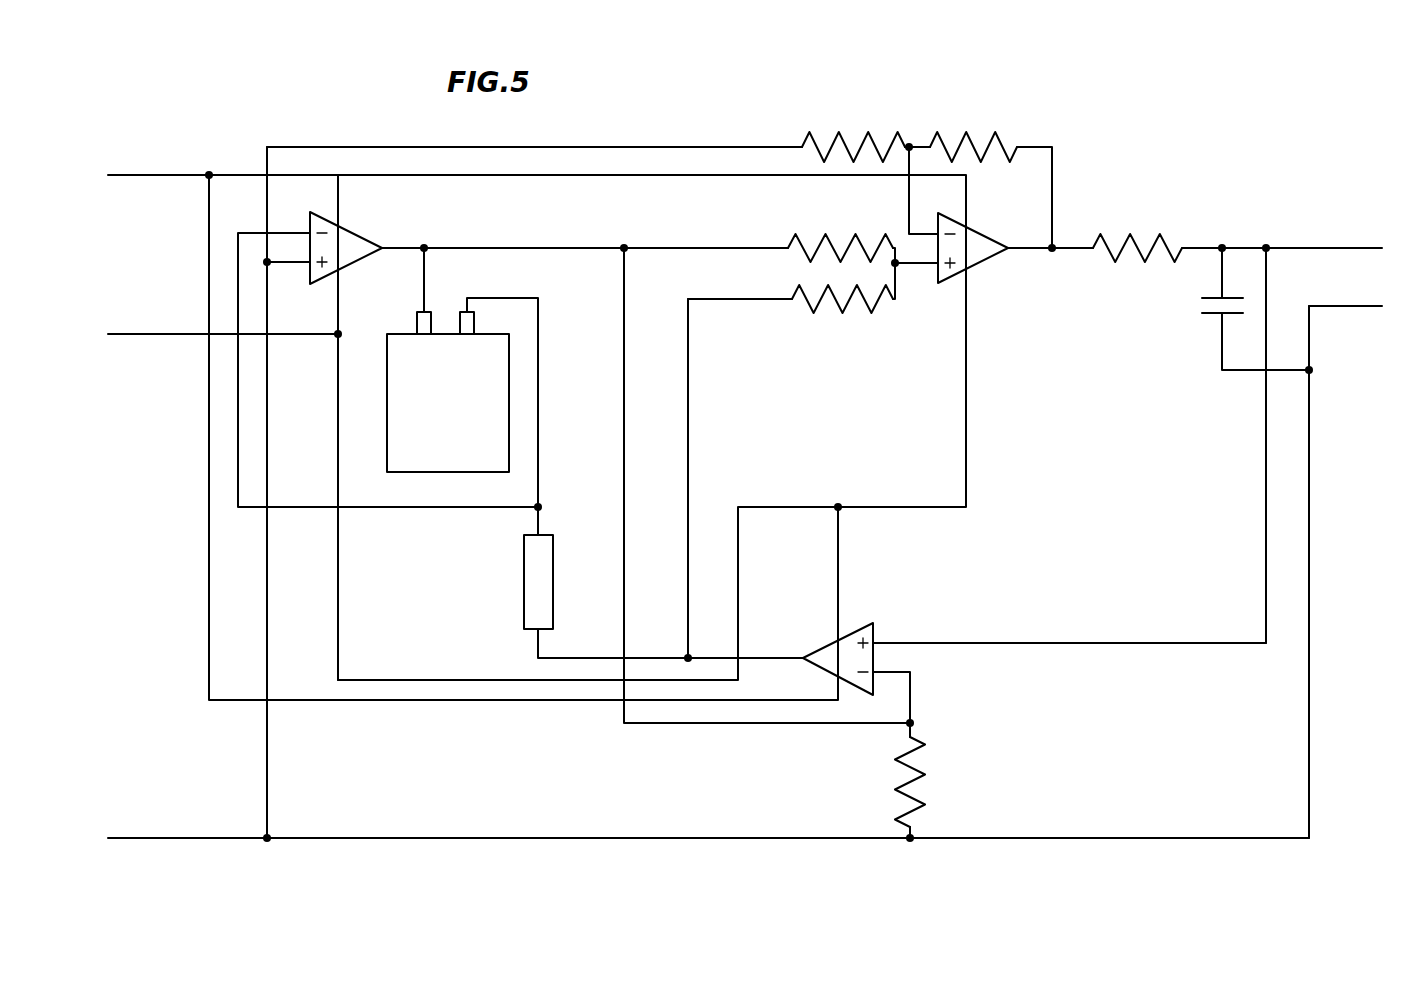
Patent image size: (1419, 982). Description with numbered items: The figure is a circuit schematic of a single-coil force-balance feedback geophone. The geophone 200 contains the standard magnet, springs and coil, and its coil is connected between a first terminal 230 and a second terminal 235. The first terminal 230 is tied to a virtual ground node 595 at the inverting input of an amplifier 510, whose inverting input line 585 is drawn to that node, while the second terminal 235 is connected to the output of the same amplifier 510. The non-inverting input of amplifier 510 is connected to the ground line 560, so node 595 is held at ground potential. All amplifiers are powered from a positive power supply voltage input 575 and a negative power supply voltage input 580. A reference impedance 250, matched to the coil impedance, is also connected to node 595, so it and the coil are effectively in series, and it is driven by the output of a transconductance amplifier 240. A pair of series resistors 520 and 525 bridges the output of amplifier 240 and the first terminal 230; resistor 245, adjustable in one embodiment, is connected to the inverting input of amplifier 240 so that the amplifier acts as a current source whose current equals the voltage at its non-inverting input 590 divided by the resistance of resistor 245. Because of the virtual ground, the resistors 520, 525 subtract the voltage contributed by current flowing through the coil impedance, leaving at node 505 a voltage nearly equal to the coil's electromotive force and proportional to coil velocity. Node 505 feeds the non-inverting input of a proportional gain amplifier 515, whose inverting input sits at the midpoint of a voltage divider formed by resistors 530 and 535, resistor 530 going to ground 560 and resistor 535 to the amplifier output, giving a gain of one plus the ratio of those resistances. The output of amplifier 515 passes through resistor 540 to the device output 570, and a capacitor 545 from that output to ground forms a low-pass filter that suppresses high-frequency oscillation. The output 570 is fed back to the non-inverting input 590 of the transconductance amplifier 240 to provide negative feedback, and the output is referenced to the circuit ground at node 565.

The negative power supply voltage input 580 is at (166, 175).
The positive power supply voltage input 575 is at (166, 334).
The ground line 560 is at (165, 838).
The inverting input line of amplifier 585 is at (252, 233).
The amplifier 510 is at (350, 230).
The second terminal 235 is at (420, 303).
The first terminal 230 is at (488, 297).
The geophone 200 is at (460, 474).
The virtual ground node 595 is at (542, 505).
The reference impedance 250 is at (524, 592).
The resistor 525 is at (795, 242).
The resistor 520 is at (797, 293).
The resistor 530 is at (806, 140).
The resistor 535 is at (936, 140).
The node 505 is at (920, 264).
The proportional gain amplifier 515 is at (982, 265).
The resistor 540 is at (1160, 242).
The capacitor 545 is at (1205, 313).
The device output 570 is at (1298, 248).
The node 565 is at (1322, 306).
The non-inverting input 590 is at (945, 643).
The transconductance amplifier 240 is at (828, 645).
The resistor 245 is at (926, 773).